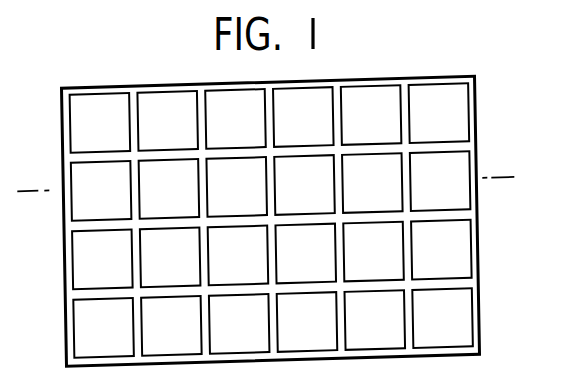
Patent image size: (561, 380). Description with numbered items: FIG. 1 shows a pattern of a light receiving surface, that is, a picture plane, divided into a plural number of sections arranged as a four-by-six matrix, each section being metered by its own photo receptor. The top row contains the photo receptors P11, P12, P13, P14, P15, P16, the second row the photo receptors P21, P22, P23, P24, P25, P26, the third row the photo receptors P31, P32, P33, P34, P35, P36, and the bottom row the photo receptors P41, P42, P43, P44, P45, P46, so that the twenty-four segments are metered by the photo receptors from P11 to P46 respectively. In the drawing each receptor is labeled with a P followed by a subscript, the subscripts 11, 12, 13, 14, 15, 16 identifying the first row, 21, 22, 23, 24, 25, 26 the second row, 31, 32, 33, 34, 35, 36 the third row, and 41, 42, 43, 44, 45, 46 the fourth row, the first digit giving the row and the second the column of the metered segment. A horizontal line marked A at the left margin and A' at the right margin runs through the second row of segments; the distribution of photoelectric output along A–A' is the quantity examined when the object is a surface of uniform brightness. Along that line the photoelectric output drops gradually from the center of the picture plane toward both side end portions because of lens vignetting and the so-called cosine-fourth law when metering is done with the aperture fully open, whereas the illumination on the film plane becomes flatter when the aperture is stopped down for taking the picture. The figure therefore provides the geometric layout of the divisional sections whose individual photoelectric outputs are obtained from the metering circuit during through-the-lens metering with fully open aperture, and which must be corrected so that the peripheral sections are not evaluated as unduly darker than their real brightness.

The photo receptor P11 is at (116, 114).
The photo receptor P12 is at (173, 114).
The photo receptor P13 is at (241, 114).
The photo receptor P14 is at (309, 114).
The photo receptor P15 is at (377, 114).
The photo receptor P16 is at (444, 114).
The photo receptor P21 is at (118, 182).
The photo receptor P22 is at (169, 189).
The photo receptor P23 is at (236, 187).
The photo receptor P24 is at (304, 185).
The photo receptor P25 is at (372, 183).
The photo receptor P26 is at (440, 181).
The photo receptor P31 is at (118, 250).
The photo receptor P32 is at (170, 258).
The photo receptor P33 is at (238, 256).
The photo receptor P34 is at (305, 254).
The photo receptor P35 is at (373, 252).
The photo receptor P36 is at (441, 250).
The photo receptor P41 is at (118, 319).
The photo receptor P42 is at (171, 326).
The photo receptor P43 is at (239, 324).
The photo receptor P44 is at (307, 322).
The photo receptor P45 is at (375, 320).
The photo receptor P46 is at (442, 318).
The picture element P11 11 is at (100, 123).
The picture element P12 12 is at (167, 121).
The picture element P13 13 is at (235, 119).
The picture element P14 14 is at (303, 117).
The picture element P15 15 is at (371, 115).
The picture element P16 16 is at (439, 113).
The picture element P21 21 is at (101, 191).
The picture element P22 22 is at (169, 189).
The picture element P23 23 is at (236, 187).
The picture element P24 24 is at (304, 185).
The picture element P25 25 is at (372, 183).
The picture element P26 26 is at (440, 181).
The picture element P31 31 is at (102, 260).
The picture element P32 32 is at (170, 258).
The picture element P33 33 is at (238, 256).
The picture element P34 34 is at (305, 254).
The picture element P35 35 is at (373, 252).
The picture element P36 36 is at (441, 250).
The picture element P41 41 is at (103, 328).
The picture element P42 42 is at (171, 326).
The picture element P43 43 is at (239, 324).
The picture element P44 44 is at (307, 322).
The picture element P45 45 is at (375, 320).
The picture element P46 46 is at (442, 318).
The section line A-A' A is at (25, 191).
The section line A- A' is at (511, 181).